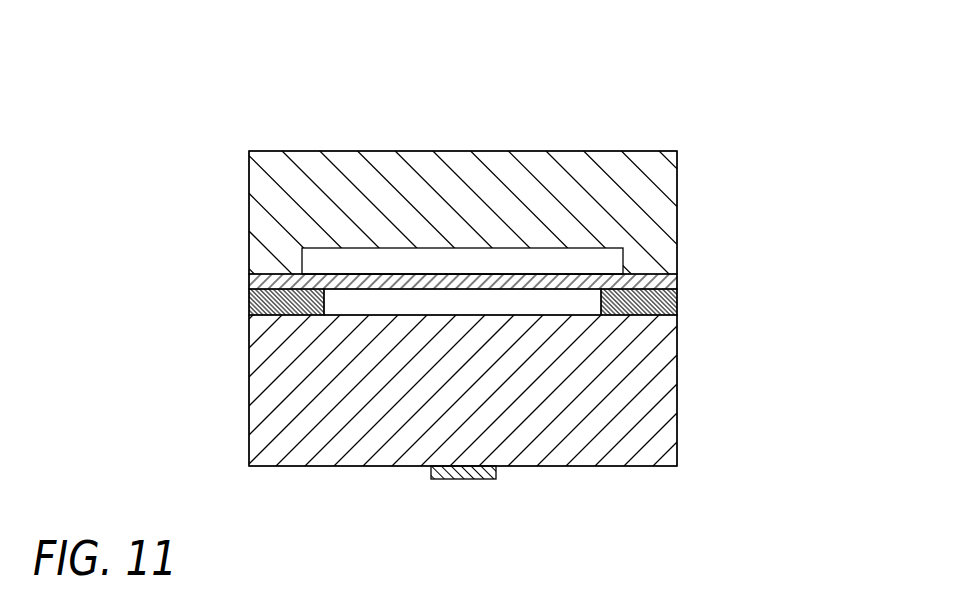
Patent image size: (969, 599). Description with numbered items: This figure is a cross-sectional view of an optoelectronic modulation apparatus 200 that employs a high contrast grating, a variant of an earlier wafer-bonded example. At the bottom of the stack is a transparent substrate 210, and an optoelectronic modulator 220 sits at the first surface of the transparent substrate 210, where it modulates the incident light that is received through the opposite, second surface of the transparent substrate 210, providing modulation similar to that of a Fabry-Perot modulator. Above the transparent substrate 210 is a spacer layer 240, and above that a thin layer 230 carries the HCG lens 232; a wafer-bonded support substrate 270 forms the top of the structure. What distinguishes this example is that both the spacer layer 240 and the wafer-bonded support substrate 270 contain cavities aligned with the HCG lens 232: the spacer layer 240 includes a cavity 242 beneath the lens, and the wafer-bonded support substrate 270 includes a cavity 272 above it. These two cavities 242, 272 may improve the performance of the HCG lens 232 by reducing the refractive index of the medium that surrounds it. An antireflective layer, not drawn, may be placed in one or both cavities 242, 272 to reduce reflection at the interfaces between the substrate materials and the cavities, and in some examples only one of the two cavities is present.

The optoelectronic modulation apparatus 200 is at (760, 60).
The transparent substrate 210 is at (677, 388).
The optoelectronic modulator 220 is at (461, 480).
The membrane layer 230 is at (250, 280).
The HCG lens 232 is at (520, 268).
The spacer layer 240 is at (677, 300).
The cavity 242 is at (580, 313).
The wafer-bonded support substrate 270 is at (677, 211).
The cavity 272 is at (320, 250).